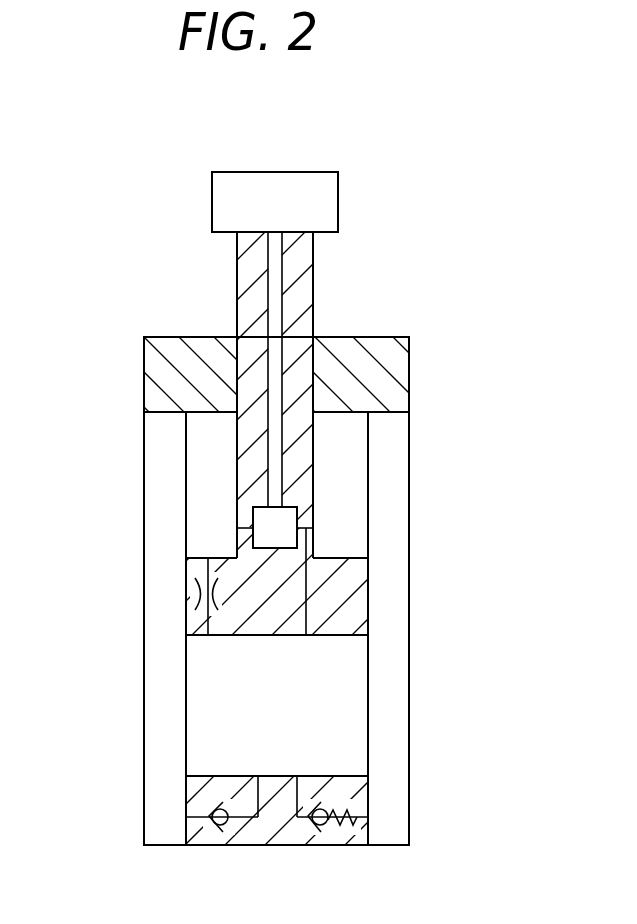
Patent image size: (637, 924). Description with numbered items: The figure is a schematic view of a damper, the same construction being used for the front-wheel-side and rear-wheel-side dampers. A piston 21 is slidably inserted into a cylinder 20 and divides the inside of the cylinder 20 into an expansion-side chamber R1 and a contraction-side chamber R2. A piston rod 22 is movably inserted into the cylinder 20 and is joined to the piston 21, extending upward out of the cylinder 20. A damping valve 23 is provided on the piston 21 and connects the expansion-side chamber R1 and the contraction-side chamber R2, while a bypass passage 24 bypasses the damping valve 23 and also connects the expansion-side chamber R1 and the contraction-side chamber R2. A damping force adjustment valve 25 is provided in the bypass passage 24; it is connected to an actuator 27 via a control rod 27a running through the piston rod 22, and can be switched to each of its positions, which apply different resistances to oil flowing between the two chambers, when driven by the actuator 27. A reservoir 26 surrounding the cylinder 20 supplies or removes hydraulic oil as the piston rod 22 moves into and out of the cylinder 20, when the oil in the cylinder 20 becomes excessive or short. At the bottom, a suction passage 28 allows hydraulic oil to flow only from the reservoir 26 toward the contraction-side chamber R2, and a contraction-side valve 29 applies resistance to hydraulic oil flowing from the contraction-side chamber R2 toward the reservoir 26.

The cylinder 20 is at (368, 457).
The piston 21 is at (363, 592).
The piston rod 22 is at (313, 292).
The damping valve 23 is at (198, 597).
The bypass passage 24 is at (307, 615).
The damping force adjustment valve 25 is at (253, 518).
The reservoir 26 is at (397, 684).
The actuator 27 is at (250, 172).
The control rod 27a is at (268, 303).
The suction passage 28 is at (218, 826).
The contraction-side valve 29 is at (320, 826).
The expansion-side chamber R1 is at (203, 459).
The contraction-side chamber R2 is at (198, 712).